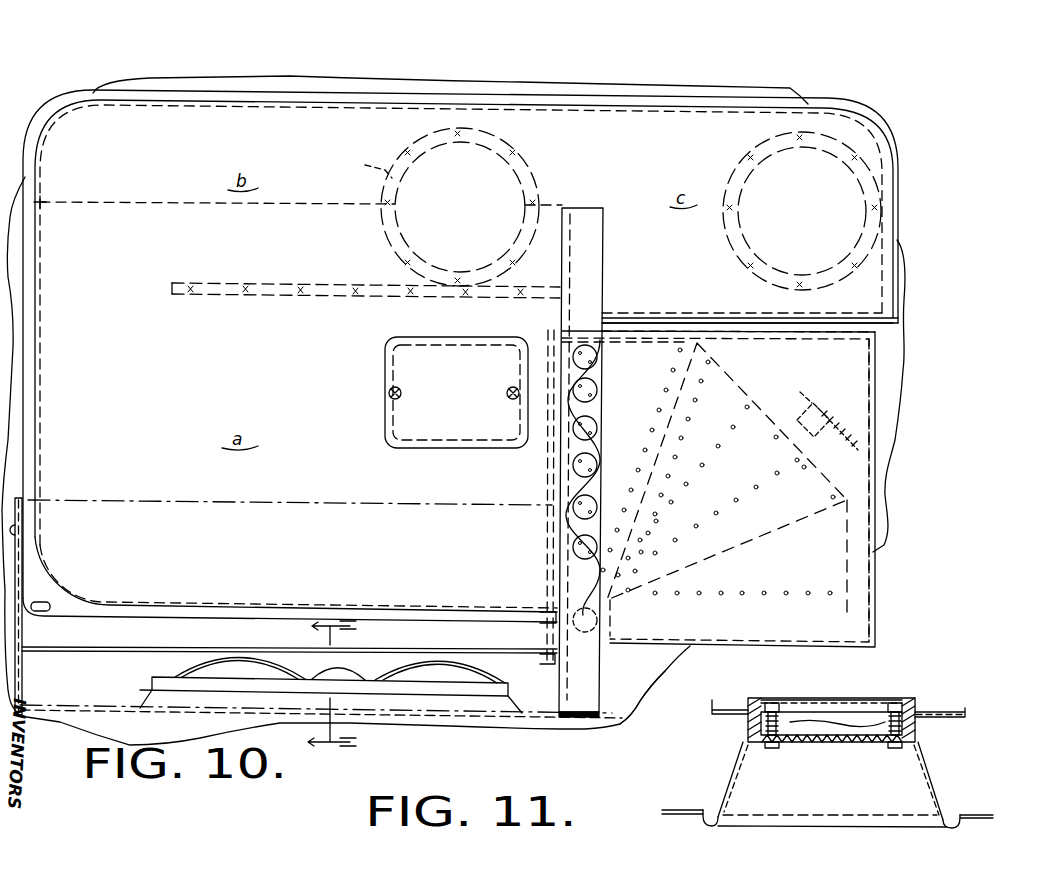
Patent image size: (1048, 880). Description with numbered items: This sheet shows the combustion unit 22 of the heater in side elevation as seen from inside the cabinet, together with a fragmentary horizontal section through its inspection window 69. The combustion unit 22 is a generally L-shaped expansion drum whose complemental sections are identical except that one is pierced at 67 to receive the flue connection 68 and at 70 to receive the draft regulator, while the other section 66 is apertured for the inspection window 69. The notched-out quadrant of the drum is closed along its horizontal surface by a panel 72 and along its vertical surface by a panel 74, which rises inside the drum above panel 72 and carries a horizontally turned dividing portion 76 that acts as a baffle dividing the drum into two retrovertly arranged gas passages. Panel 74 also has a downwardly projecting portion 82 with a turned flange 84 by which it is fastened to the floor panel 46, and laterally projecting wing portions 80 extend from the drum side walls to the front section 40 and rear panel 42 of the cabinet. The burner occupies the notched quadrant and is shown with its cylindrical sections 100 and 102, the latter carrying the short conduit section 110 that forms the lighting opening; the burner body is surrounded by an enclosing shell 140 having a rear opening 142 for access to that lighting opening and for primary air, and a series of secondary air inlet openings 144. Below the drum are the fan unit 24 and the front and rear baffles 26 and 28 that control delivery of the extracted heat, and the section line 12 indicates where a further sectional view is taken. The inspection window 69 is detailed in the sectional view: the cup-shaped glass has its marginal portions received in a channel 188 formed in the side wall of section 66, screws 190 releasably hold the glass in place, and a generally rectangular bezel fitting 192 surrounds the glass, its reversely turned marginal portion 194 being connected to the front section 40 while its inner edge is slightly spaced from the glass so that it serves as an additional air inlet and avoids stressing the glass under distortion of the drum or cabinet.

In FIG. 10, the combustion unit 22 is at (894, 144).
In FIG. 10, the front baffle 26 is at (20, 553).
In FIG. 10, the flue connection 68 is at (522, 150).
In FIG. 10, the pierced opening for flue connection 67 is at (366, 166).
In FIG. 10, the draft regulator opening 70 is at (858, 272).
In FIG. 10, the horizontally turned dividing portion 76 is at (248, 282).
In FIG. 10, the wing portion 80 is at (598, 257).
In FIG. 10, the panel 74 is at (562, 264).
In FIG. 10, the turned flange 84 is at (566, 719).
In FIG. 10, the downwardly projecting portion 82 is at (558, 682).
In FIG. 10, the enclosing shell 140 is at (878, 349).
In FIG. 10, the rear opening 142 is at (876, 436).
In FIG. 10, the cylindrical section 100 is at (680, 314).
In FIG. 10, the panel 72 is at (772, 318).
In FIG. 10, the cylindrical section 102 is at (748, 376).
In FIG. 10, the conduit section 110 is at (810, 442).
In FIG. 10, the inspection window 69 is at (464, 409).
In FIG. 11, the inspection window 69 is at (845, 743).
In FIG. 10, the secondary air inlet openings 144 is at (572, 466).
In FIG. 10, the rear baffle 28 is at (126, 647).
In FIG. 10, the fan unit 24 is at (434, 654).
In FIG. 10, the rear panel 42 is at (158, 733).
In FIG. 10, the section line 12 is at (311, 690).
In FIG. 10, the floor panel 46 is at (644, 697).
In FIG. 11, the drum section 66 is at (940, 712).
In FIG. 11, the screws 190 is at (883, 722).
In FIG. 11, the channel 188 is at (915, 699).
In FIG. 11, the bezel fitting 192 is at (937, 775).
In FIG. 11, the front section 40 is at (670, 810).
In FIG. 11, the reversely turned marginal portion 194 is at (708, 823).